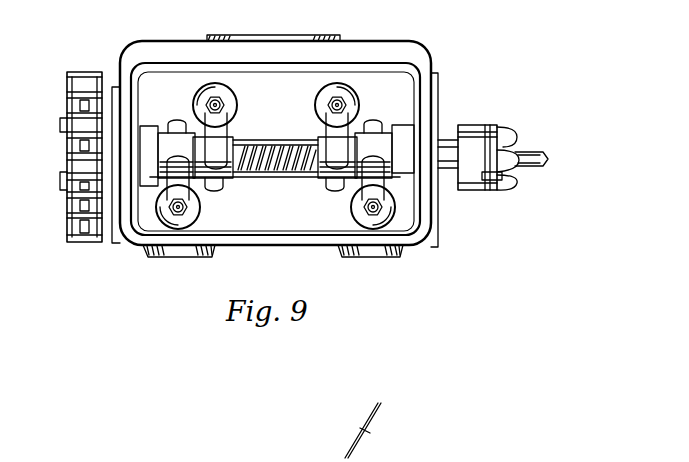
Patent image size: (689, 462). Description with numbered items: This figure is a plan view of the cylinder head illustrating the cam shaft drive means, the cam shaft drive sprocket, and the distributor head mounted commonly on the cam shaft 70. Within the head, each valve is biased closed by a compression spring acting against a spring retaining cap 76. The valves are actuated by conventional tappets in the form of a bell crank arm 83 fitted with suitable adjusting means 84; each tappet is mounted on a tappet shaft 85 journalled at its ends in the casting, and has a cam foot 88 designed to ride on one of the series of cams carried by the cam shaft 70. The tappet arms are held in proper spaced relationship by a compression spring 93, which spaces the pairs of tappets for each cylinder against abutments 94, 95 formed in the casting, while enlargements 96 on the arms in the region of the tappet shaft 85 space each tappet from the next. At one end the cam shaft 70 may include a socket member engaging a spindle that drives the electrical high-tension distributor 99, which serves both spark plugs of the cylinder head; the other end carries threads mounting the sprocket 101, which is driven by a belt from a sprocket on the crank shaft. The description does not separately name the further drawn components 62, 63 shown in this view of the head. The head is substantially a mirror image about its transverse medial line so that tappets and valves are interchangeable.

The housing 62 is at (395, 32).
The housing cover wall 63 is at (427, 56).
The cam shaft 70 is at (275, 185).
The spring retaining cap 76 is at (203, 93).
The bell crank arm 83 is at (201, 107).
The adjusting means 84 is at (220, 102).
The tappet shaft 85 is at (273, 142).
The cam foot 88 is at (169, 122).
The compression spring 93 is at (247, 139).
The abutment 94 is at (420, 137).
The abutment 95 is at (141, 155).
The enlargements 96 is at (326, 184).
The electrical high-tension distributor 99 is at (482, 127).
The sprocket 101 is at (87, 72).